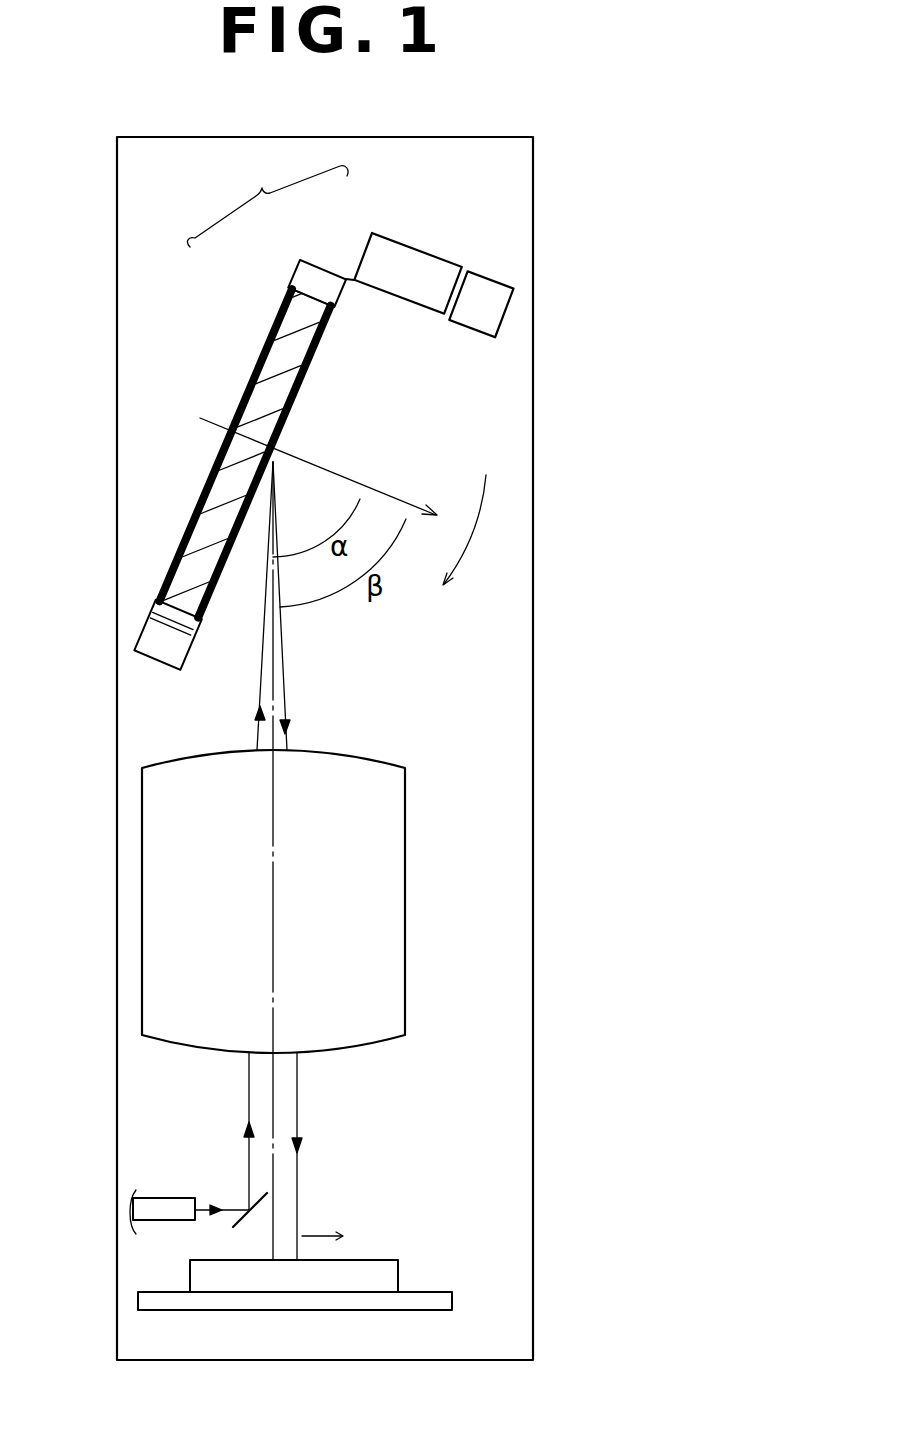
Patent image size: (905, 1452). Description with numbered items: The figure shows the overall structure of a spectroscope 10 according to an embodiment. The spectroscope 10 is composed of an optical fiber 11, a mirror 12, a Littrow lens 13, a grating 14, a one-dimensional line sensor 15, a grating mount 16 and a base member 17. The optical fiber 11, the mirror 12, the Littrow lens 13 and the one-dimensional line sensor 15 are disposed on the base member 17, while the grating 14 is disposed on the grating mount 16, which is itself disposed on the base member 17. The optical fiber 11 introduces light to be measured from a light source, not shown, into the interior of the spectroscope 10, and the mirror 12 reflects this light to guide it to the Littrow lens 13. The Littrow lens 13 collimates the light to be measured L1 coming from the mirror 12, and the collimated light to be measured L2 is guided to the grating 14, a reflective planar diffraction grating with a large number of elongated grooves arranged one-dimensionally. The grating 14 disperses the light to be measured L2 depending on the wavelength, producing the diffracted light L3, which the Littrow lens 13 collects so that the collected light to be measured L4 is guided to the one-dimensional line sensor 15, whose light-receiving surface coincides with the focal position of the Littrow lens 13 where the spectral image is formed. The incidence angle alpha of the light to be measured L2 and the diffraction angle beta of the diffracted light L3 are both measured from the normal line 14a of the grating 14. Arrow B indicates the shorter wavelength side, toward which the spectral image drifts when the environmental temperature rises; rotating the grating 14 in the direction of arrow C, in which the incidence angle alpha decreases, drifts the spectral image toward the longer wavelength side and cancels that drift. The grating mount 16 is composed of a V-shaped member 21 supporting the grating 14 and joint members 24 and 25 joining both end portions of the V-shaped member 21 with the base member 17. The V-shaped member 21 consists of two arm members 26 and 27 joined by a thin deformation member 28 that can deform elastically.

The spectroscope 10 is at (90, 106).
The optical fiber 11 is at (170, 1205).
The mirror 12 is at (236, 1224).
The Littrow lens 13 is at (405, 940).
The grating 14 is at (277, 363).
The normal line 14a is at (323, 469).
The one-dimensional line sensor 15 is at (370, 1272).
The grating mount 16 is at (418, 227).
The base member 17 is at (513, 619).
The V-shaped member 21 is at (268, 200).
The joint member 24 is at (490, 312).
The joint member 25 is at (154, 633).
The arm member 26 is at (306, 281).
The arm member 27 is at (396, 258).
The deformation member 28 is at (347, 277).
The light to be measured L1 is at (249, 1090).
The light to be measured L2 is at (257, 702).
The diffracted light L3 is at (287, 700).
The light to be measured L4 is at (297, 1088).
The arrow B is at (322, 1218).
The arrow C is at (471, 530).